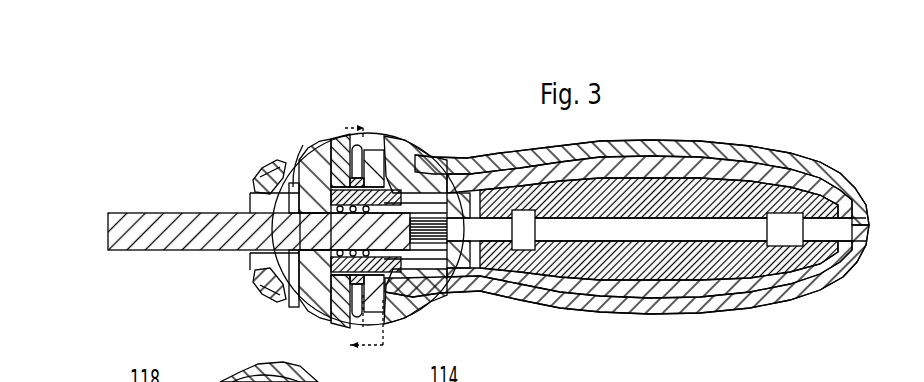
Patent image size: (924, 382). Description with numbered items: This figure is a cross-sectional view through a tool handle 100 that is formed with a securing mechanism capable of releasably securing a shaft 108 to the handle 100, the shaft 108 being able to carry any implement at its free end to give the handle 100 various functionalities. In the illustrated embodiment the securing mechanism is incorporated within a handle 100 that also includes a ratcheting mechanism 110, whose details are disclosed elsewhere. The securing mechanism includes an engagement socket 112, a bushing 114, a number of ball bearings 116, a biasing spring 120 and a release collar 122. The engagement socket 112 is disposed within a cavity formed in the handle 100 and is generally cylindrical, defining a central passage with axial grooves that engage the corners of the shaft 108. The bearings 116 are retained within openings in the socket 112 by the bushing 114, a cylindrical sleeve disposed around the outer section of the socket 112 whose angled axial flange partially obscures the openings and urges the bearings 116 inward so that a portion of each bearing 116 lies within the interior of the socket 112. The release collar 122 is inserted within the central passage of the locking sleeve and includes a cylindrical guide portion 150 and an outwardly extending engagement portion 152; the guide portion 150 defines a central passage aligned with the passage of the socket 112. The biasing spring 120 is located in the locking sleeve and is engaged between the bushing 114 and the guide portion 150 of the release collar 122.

The handle 100 is at (679, 126).
The shaft 108 is at (157, 208).
The ratcheting mechanism 110 is at (310, 147).
The engagement socket 112 is at (428, 264).
The bushing 114 is at (383, 178).
The ball bearings 116 is at (353, 138).
The biasing spring 120 is at (365, 180).
The release collar 122 is at (256, 172).
The guide portion 150 is at (256, 192).
The engagement portion 152 is at (265, 290).